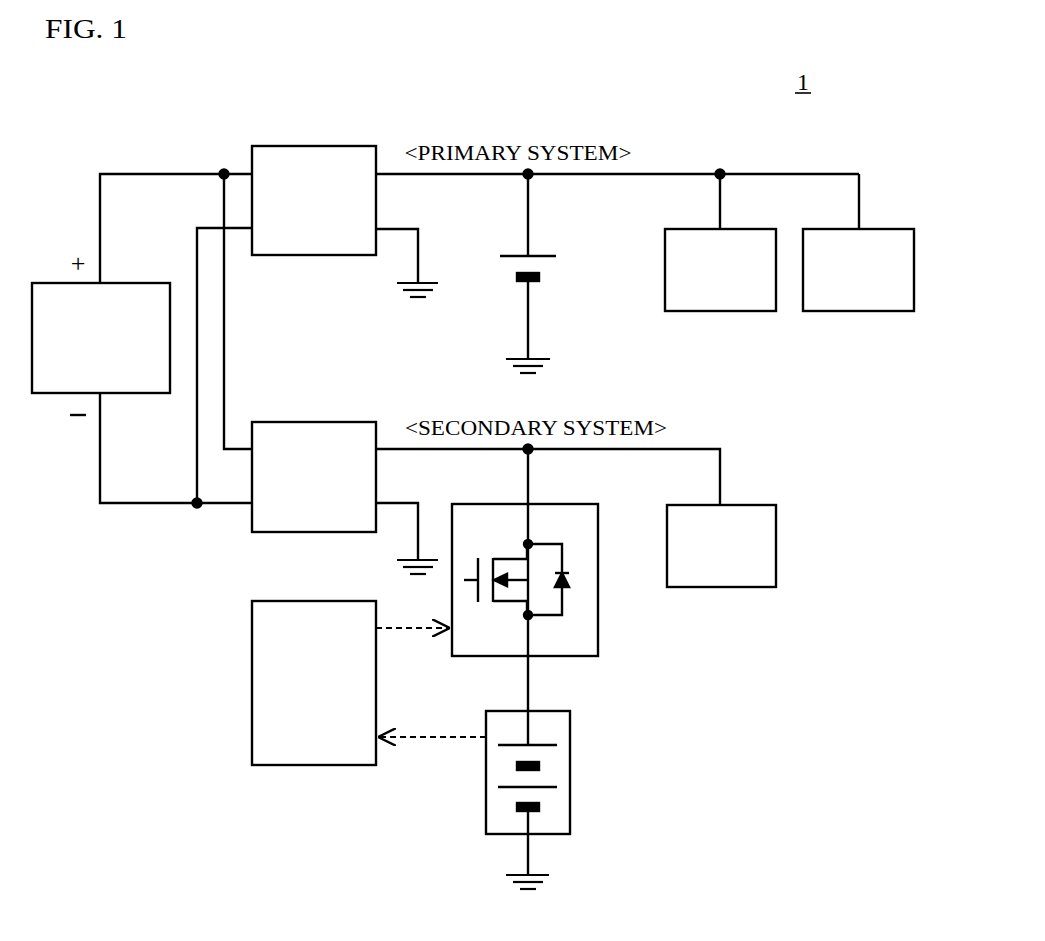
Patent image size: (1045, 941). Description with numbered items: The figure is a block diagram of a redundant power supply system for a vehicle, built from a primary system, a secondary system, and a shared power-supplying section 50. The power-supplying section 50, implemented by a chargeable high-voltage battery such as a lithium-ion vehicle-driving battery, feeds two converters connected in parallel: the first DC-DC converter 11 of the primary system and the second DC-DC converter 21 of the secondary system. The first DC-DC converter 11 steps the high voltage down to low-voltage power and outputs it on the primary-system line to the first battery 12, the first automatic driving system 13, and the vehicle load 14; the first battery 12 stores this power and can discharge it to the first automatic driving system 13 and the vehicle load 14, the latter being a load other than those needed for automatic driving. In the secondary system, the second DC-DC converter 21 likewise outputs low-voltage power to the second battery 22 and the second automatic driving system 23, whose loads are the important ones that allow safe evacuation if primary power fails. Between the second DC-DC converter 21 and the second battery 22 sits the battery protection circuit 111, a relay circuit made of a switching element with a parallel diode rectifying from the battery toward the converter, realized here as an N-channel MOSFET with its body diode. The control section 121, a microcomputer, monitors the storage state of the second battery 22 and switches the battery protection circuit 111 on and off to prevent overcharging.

The first DC-DC converter 11 is at (343, 146).
The first battery 12 is at (542, 248).
The first automatic driving system 13 is at (748, 228).
The vehicle load 14 is at (887, 228).
The second DC-DC converter 21 is at (343, 422).
The second battery 22 is at (572, 768).
The second automatic driving system 23 is at (747, 503).
The power-supplying section 50 is at (126, 283).
The battery protection circuit 111 is at (600, 538).
The control section 121 is at (252, 641).